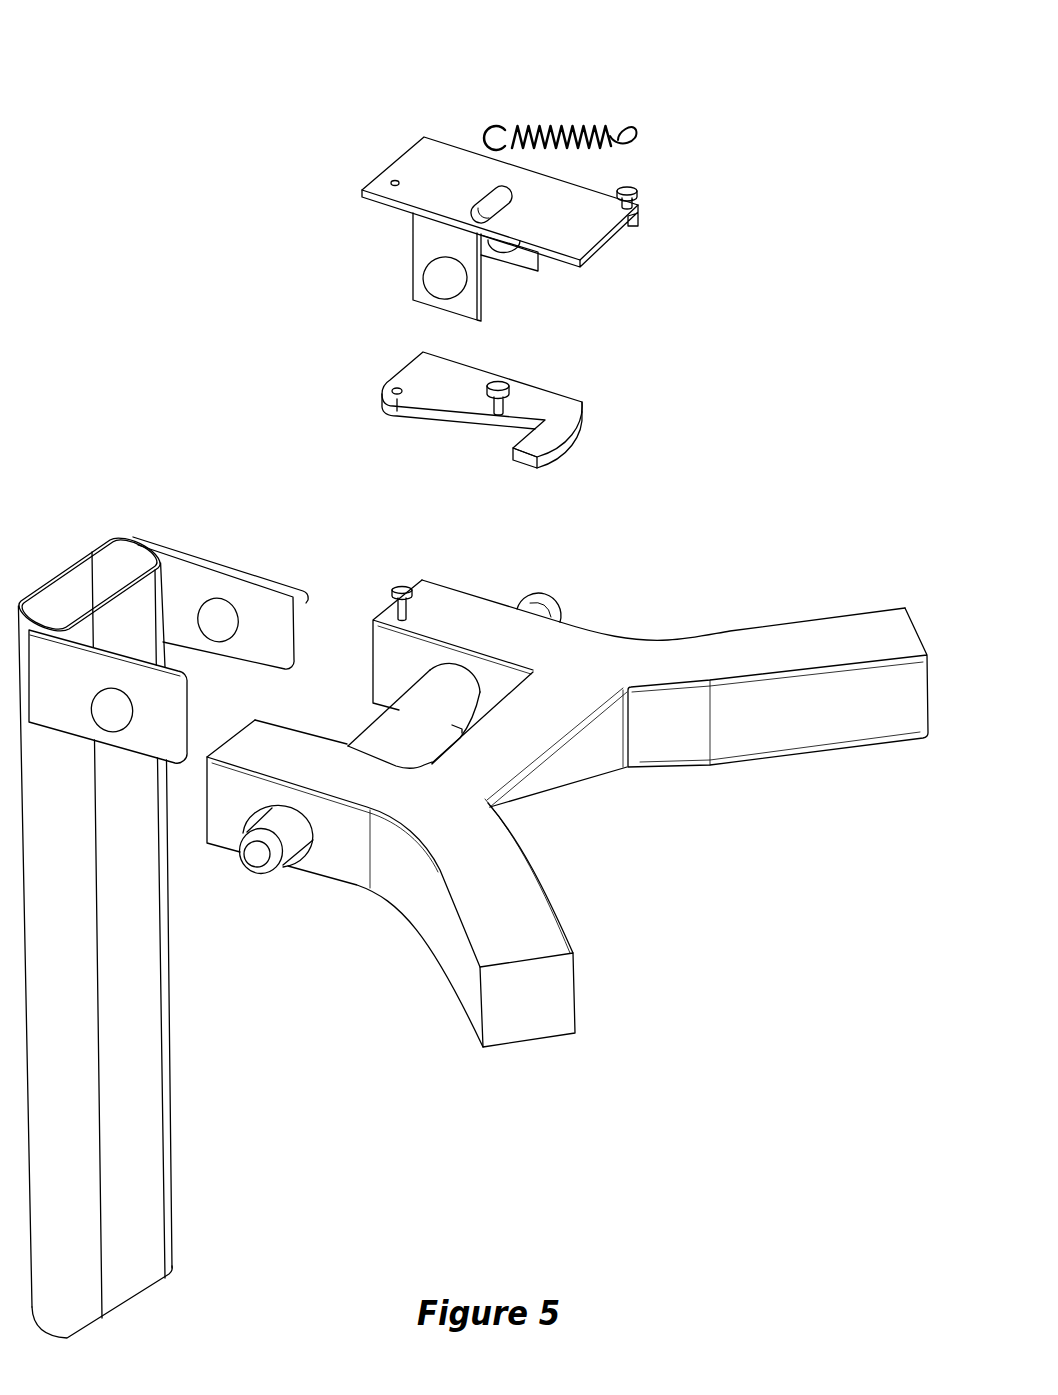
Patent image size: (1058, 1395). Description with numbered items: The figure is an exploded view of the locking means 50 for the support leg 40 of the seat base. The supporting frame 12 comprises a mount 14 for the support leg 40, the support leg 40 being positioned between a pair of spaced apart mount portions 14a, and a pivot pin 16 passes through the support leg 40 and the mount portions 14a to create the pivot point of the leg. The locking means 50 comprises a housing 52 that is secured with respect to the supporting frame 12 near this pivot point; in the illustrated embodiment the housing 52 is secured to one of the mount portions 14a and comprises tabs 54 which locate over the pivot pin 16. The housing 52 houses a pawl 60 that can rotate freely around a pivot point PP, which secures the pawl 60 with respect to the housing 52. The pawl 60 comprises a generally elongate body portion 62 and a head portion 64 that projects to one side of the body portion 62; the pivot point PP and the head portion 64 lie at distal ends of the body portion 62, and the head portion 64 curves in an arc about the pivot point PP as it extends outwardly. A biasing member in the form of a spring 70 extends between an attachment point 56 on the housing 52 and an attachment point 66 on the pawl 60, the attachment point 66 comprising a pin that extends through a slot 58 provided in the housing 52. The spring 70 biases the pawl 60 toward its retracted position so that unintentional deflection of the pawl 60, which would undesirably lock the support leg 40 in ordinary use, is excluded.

The supporting frame 12 is at (795, 640).
The mount 14 is at (347, 896).
The mount portions 14a is at (463, 618).
The pivot pin 16 is at (543, 612).
The support leg 40 is at (137, 1187).
The locking means 50 is at (449, 105).
The housing 52 is at (427, 155).
The tabs 54 is at (413, 250).
The attachment point 56 is at (629, 187).
The slot 58 is at (487, 200).
The pawl 60 is at (593, 389).
The body portion 62 is at (435, 393).
The head portion 64 is at (557, 446).
The attachment point 66 is at (494, 401).
The spring 70 is at (563, 116).
The pivot point PP is at (395, 388).